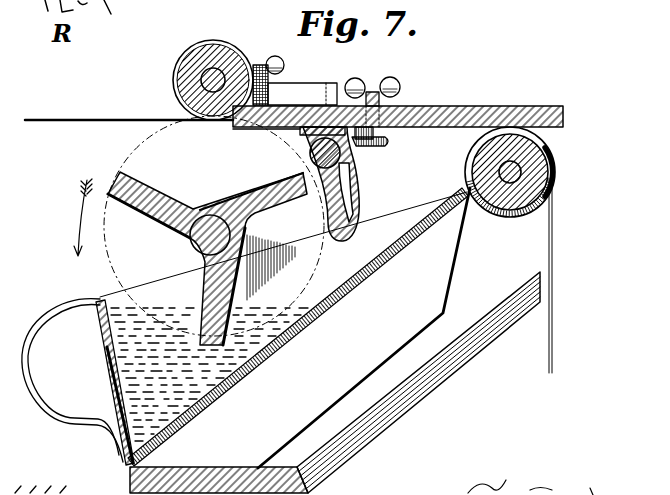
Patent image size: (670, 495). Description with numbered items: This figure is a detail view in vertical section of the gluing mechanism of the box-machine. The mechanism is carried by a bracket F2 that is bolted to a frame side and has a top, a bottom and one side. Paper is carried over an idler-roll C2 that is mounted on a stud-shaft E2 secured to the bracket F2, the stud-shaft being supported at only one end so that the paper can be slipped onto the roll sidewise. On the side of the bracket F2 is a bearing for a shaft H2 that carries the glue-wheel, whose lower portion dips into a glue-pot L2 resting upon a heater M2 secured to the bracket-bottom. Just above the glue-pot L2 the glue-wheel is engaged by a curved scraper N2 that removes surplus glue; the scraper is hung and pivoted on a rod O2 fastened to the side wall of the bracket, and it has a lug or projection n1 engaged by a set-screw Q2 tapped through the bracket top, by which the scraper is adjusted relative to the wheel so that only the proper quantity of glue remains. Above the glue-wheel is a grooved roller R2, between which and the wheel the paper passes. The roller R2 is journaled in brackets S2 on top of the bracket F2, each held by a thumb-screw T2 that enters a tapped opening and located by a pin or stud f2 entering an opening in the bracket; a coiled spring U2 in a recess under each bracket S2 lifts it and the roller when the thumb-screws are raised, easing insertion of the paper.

The roller R2 is at (187, 82).
The thumb-screw T2 is at (263, 62).
The bracket S2 is at (310, 90).
The set-screw Q2 is at (400, 87).
The bracket F2 is at (490, 108).
The coiled spring U2 is at (232, 127).
The pin or stud f2 is at (282, 128).
The shaft H2 is at (203, 205).
The glue-pot L2 is at (156, 288).
The rod O2 is at (327, 170).
The scraper N2 is at (360, 192).
The lug or projection n1 is at (373, 147).
The stud-shaft E2 is at (500, 167).
The idler-roll C2 is at (550, 170).
The heater M2 is at (246, 340).